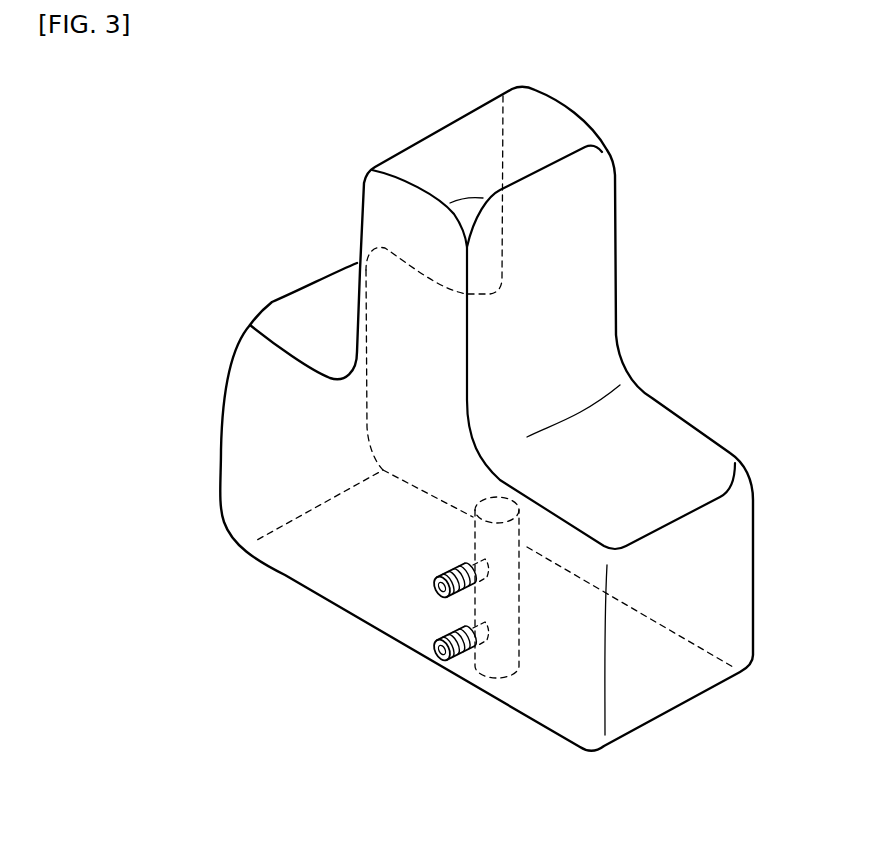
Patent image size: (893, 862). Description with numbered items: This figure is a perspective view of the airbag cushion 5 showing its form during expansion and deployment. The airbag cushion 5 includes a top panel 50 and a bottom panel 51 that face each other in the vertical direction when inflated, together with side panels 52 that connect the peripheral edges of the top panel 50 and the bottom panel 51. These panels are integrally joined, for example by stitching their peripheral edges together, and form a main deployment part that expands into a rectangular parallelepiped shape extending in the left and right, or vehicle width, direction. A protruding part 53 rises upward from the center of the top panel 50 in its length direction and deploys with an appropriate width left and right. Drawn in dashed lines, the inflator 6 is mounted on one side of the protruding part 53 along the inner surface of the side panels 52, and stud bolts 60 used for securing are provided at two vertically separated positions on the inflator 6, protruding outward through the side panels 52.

The airbag cushion 5 is at (305, 267).
The top panel 50 is at (678, 430).
The bottom panel 51 is at (630, 700).
The side panels 52 is at (297, 570).
The protruding part 53 is at (453, 123).
The inflator 6 is at (521, 627).
The stud bolts 60 is at (432, 596).